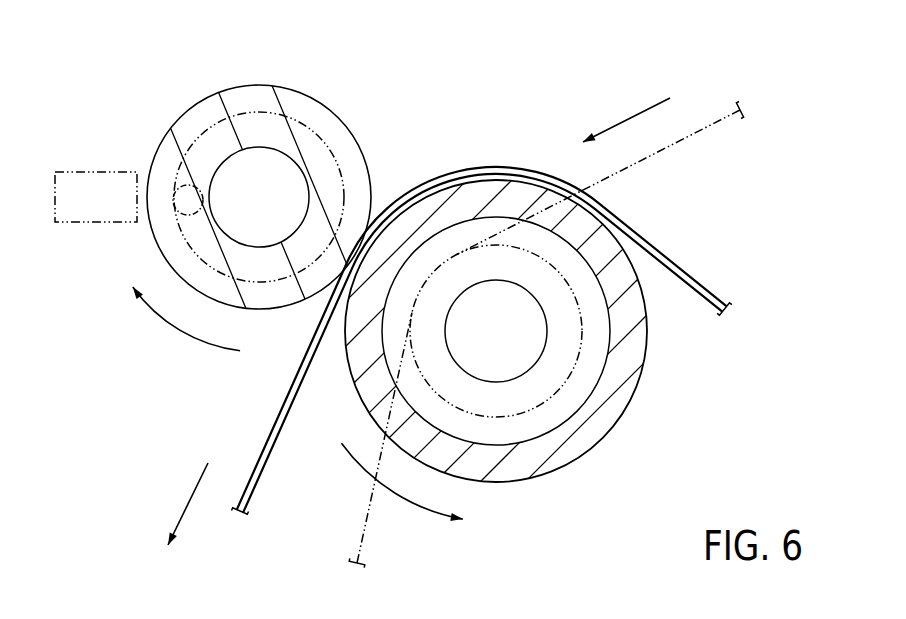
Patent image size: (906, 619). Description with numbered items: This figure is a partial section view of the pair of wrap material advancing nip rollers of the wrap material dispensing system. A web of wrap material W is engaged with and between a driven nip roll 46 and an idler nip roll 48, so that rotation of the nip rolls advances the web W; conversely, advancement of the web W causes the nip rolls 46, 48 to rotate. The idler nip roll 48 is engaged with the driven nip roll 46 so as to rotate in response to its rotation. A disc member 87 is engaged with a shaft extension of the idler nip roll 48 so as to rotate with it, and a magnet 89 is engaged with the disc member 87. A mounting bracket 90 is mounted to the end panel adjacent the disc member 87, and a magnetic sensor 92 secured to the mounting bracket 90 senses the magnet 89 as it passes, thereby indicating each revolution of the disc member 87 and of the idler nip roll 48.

The driven nip roll 46 is at (495, 484).
The idler nip roll 48 is at (318, 135).
The disc member 87 is at (183, 108).
The magnet 89 is at (177, 233).
The mounting bracket 90 is at (645, 161).
The sensor 92 is at (95, 170).
The web of wrap material W is at (268, 425).